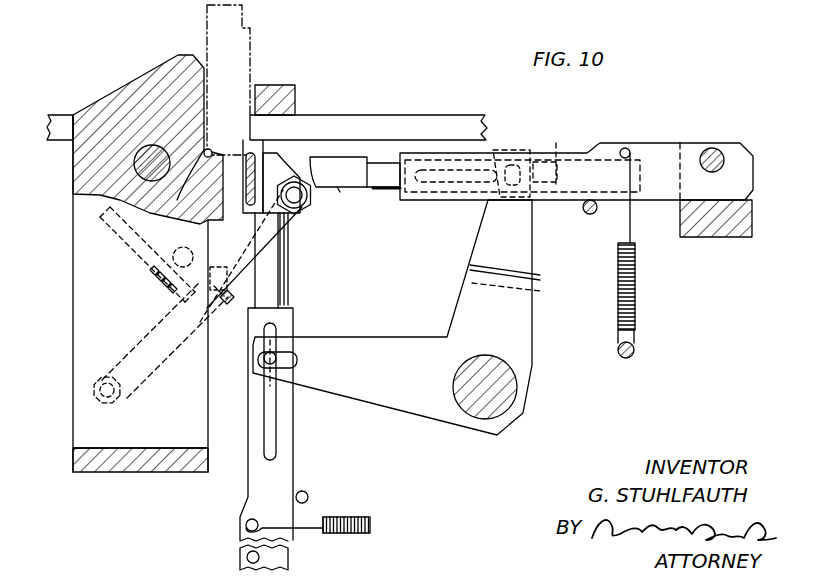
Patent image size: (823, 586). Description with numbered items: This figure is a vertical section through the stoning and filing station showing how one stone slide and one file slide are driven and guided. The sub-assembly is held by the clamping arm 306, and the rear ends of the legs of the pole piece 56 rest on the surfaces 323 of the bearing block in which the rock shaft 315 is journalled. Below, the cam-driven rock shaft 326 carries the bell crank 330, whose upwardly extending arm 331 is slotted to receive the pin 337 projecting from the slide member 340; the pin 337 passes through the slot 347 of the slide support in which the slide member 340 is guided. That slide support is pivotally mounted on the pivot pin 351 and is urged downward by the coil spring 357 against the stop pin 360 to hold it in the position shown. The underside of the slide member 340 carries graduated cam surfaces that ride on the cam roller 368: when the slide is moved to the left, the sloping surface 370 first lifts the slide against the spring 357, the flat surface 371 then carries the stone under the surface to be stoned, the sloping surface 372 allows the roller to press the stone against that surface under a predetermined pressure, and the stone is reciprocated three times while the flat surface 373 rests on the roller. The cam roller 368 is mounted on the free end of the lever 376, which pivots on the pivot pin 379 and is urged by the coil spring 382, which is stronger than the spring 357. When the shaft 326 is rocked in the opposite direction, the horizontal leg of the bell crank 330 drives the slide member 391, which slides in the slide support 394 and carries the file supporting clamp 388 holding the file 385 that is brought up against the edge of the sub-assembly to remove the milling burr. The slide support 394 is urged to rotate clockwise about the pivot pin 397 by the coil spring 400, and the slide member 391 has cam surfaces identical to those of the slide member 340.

The pole piece 56 is at (242, 8).
The clamping arm 306 is at (280, 88).
The rock shaft 315 is at (145, 150).
The surfaces 323 is at (180, 188).
The slide member 340 is at (384, 163).
The file 385 is at (250, 175).
The file supporting clamp 388 is at (272, 163).
The cam roller 368 is at (299, 208).
The sloping surface 370 is at (310, 157).
The flat surface 371 is at (337, 188).
The sloping surface 372 is at (354, 190).
The flat surface 373 is at (373, 190).
The arm 331 is at (486, 229).
The pin 337 is at (520, 150).
The slot 347 is at (556, 160).
The pivot pin 351 is at (713, 151).
The stop pin 360 is at (585, 212).
The coil spring 357 is at (635, 278).
The rock shaft 326 is at (517, 390).
The bell crank 330 is at (472, 273).
The lever 376 is at (240, 282).
The slide member 391 is at (284, 292).
The slide support 394 is at (285, 322).
The pivot pin 397 is at (247, 557).
The coil spring 400 is at (343, 516).
The coil spring 382 is at (158, 294).
The pivot pin 379 is at (124, 400).